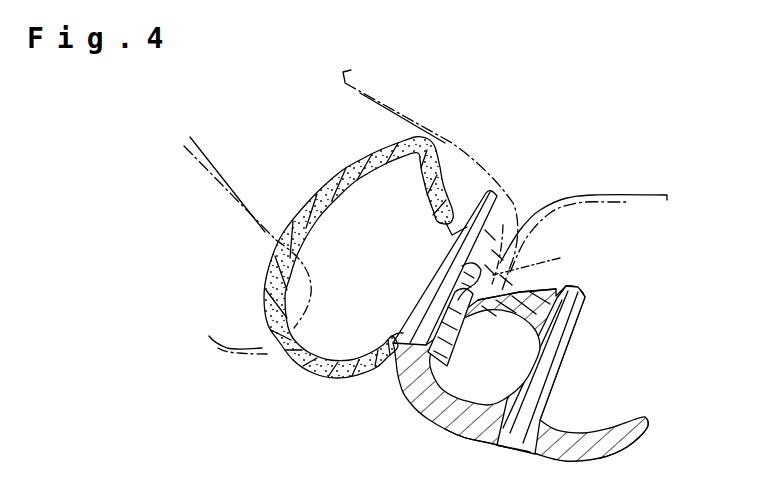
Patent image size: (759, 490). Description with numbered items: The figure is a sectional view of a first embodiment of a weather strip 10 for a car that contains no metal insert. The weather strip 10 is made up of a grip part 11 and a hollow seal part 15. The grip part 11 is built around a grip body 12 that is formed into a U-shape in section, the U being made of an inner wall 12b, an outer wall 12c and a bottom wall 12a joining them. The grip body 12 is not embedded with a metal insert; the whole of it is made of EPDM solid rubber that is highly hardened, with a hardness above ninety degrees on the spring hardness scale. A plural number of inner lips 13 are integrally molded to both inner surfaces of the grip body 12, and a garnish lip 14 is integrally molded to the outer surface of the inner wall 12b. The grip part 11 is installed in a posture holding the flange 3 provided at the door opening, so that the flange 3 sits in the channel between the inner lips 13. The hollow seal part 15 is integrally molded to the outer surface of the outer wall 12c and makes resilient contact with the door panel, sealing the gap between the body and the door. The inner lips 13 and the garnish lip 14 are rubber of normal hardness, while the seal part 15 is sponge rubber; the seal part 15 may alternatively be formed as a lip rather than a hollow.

The flange 3 is at (543, 254).
The weather strip 10 is at (388, 227).
The grip part 11 is at (524, 376).
The grip body 12 is at (523, 376).
The bottom wall of grip body 12a is at (460, 420).
The inner wall 12b is at (533, 362).
The outer wall 12c is at (440, 278).
The inner lips 13 is at (499, 340).
The garnish lip 14 is at (586, 438).
The hollow seal part 15 is at (307, 202).